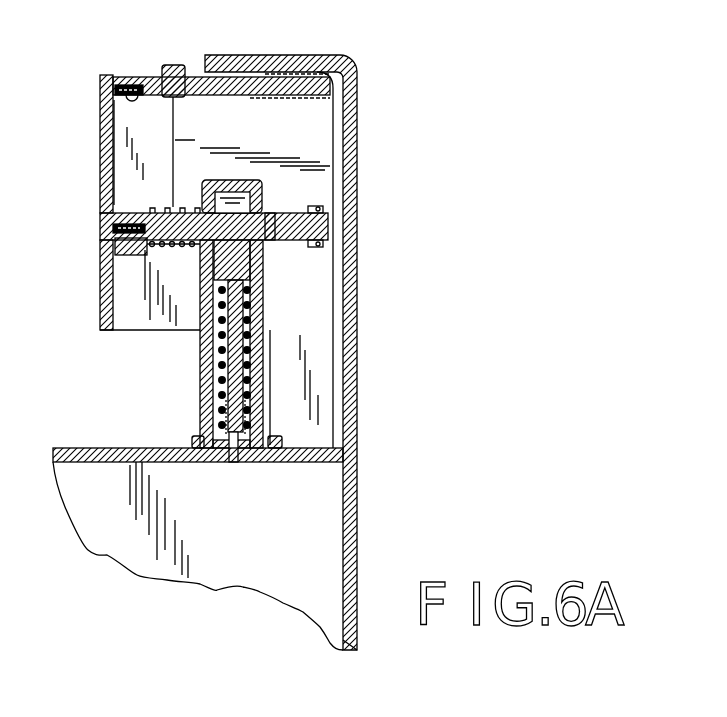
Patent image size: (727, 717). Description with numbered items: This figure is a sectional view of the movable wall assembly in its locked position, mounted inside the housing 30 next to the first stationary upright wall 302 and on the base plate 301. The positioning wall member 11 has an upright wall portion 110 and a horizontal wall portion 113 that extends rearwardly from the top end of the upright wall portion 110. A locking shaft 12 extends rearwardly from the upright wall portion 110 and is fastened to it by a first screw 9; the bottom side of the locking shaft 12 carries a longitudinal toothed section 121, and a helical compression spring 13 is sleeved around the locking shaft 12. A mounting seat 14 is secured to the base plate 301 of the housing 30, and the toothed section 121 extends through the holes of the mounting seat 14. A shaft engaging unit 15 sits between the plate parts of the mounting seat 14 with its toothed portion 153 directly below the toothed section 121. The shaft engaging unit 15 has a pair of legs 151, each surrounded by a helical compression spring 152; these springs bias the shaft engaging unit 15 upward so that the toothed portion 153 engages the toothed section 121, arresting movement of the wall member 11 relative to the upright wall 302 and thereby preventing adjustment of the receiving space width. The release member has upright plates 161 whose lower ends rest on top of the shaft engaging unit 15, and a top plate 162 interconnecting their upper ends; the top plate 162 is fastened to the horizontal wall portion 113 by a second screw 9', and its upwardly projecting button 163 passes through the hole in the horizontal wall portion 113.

The housing 30 is at (360, 97).
The first stationary upright wall 302 is at (360, 130).
The horizontal wall portion 113 is at (197, 76).
The button 163 is at (168, 65).
The top plate 162 is at (127, 84).
The positioning wall member 11 is at (100, 78).
The second screw 9' is at (76, 149).
The upright wall portion 110 is at (100, 278).
The upright plates 161 is at (320, 153).
The locking shaft 12 is at (100, 182).
The first screw 9 is at (88, 233).
The helical compression spring 13 is at (147, 256).
The toothed section 121 is at (266, 224).
The toothed portion 153 is at (270, 258).
The shaft engaging unit 15 is at (268, 266).
The mounting seat 14 is at (265, 303).
The legs 151 is at (265, 367).
The helical compression spring 152 is at (265, 400).
The base plate 301 is at (88, 447).